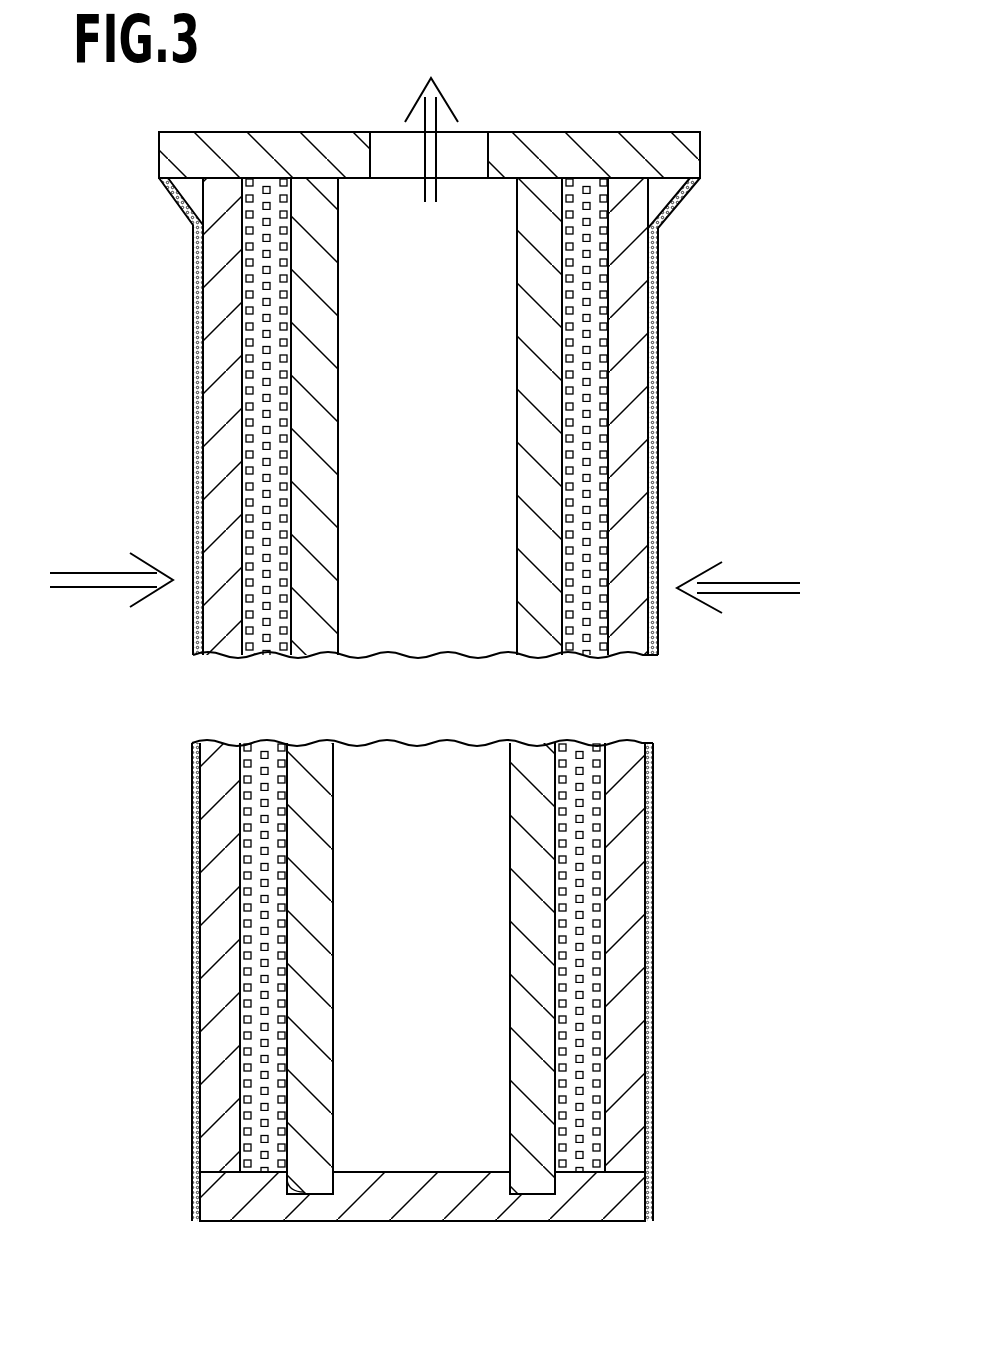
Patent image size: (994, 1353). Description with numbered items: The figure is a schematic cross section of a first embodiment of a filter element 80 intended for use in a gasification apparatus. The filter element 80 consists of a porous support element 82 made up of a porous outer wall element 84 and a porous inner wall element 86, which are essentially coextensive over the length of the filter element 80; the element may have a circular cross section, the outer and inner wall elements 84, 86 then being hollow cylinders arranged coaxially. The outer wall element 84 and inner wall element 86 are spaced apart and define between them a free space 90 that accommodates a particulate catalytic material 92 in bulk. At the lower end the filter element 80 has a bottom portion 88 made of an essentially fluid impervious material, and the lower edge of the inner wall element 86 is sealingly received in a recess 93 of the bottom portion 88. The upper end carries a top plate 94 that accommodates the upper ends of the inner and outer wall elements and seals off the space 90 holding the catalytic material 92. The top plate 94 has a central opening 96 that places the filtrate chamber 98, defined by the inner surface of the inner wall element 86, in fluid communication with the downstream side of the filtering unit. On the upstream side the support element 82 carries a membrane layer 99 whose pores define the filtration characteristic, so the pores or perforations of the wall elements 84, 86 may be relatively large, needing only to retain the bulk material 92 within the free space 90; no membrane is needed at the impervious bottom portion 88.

The filter element 80 is at (683, 110).
The porous support element 82 is at (682, 299).
The porous outer wall element 84 is at (630, 420).
The porous inner wall element 86 is at (316, 339).
The bottom portion 88 is at (428, 1210).
The free space 90 is at (254, 958).
The particulate catalytic material 92 is at (266, 826).
The recess 93 is at (290, 1186).
The top plate 94 is at (575, 148).
The central opening 96 is at (384, 132).
The filtrate chamber 98 is at (412, 584).
The membrane layer 99 is at (655, 874).